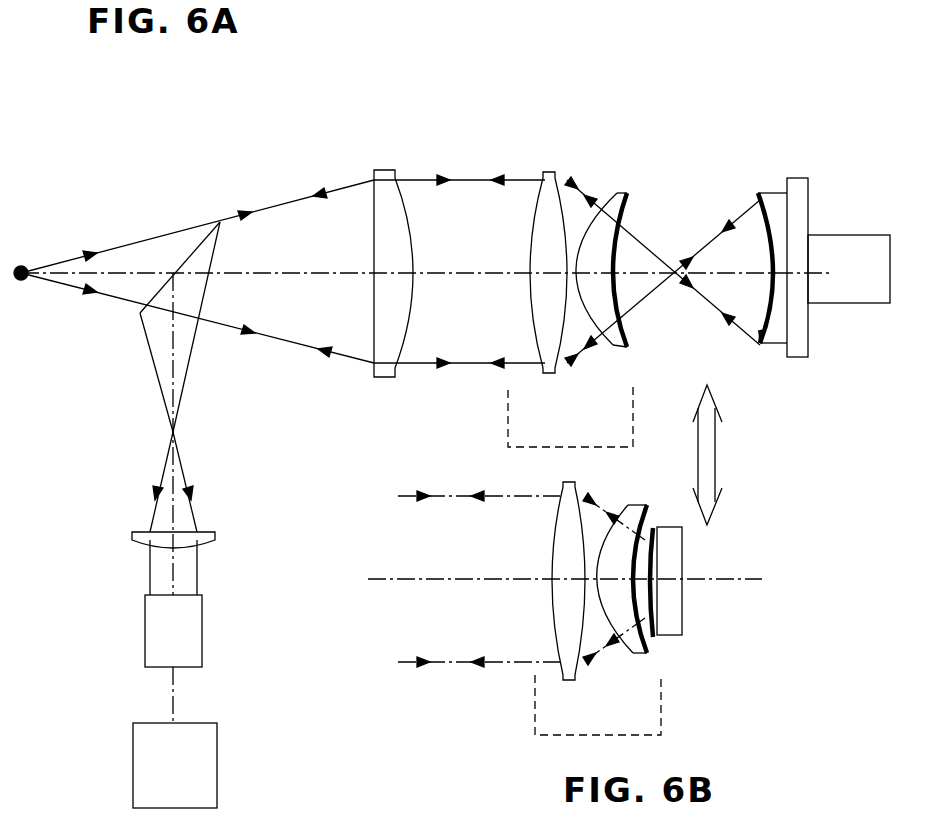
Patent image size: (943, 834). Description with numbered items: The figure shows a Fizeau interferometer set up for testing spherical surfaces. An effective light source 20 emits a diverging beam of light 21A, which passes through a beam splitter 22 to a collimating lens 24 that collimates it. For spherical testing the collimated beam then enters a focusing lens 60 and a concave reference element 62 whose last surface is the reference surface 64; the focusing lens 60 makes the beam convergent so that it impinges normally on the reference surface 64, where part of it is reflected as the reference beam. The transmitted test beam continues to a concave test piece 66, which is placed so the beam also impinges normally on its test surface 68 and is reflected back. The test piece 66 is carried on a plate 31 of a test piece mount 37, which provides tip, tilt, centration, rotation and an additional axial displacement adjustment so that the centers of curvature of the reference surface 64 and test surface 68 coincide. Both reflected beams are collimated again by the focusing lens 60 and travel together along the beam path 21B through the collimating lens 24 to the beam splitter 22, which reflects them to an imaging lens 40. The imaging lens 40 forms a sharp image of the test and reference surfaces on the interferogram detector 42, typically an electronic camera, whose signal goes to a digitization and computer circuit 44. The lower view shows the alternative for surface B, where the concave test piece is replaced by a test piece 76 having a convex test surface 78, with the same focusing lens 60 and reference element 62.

In FIG. 6A, the effective light source 20 is at (28, 267).
In FIG. 6A, the diverging beam of light 21A is at (140, 240).
In FIG. 6A, the beam path 21B is at (277, 200).
In FIG. 6A, the beam splitter 22 is at (200, 248).
In FIG. 6A, the collimating lens 24 is at (393, 170).
In FIG. 6A, the plate 31 is at (797, 178).
In FIG. 6A, the test piece mount 37 is at (827, 236).
In FIG. 6A, the imaging lens 40 is at (208, 537).
In FIG. 6A, the interferogram detector 42 is at (203, 622).
In FIG. 6A, the digitization and computer circuit 44 is at (218, 763).
In FIG. 6A, the focusing lens 60 is at (550, 172).
In FIG. 6B, the focusing lens 60 is at (565, 598).
In FIG. 6A, the concave reference element 62 is at (620, 192).
In FIG. 6B, the concave reference element 62 is at (630, 507).
In FIG. 6A, the reference surface 64 is at (628, 200).
In FIG. 6B, the reference surface 64 is at (650, 648).
In FIG. 6A, the concave test piece 66 is at (760, 192).
In FIG. 6A, the test surface 68 is at (758, 340).
In FIG. 6B, the test piece 76 is at (665, 613).
In FIG. 6B, the convex test surface 78 is at (652, 524).